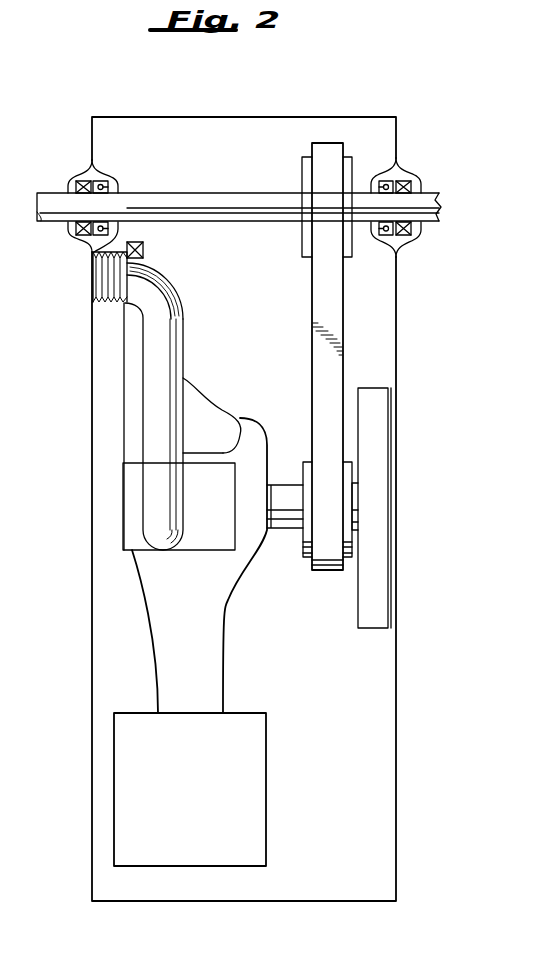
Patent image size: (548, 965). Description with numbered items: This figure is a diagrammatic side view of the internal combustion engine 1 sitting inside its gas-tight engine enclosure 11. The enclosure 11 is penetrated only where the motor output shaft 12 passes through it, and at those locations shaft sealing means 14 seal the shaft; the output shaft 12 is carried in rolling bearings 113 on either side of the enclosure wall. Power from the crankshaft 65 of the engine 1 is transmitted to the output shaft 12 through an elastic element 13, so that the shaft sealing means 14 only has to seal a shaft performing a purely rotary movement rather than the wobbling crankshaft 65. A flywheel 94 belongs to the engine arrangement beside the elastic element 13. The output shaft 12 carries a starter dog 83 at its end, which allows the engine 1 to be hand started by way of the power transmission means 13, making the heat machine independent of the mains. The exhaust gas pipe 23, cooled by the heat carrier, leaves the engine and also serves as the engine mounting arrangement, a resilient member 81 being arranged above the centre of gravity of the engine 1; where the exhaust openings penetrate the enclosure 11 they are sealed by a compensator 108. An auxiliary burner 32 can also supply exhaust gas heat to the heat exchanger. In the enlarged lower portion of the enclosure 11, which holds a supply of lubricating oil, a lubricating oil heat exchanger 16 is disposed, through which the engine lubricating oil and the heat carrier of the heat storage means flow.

The internal combustion engine 1 is at (253, 440).
The engine enclosure 11 is at (397, 660).
The output shaft 12 is at (243, 200).
The elastic element 13 is at (333, 433).
The shaft sealing means 14 is at (64, 235).
The lubricating oil heat exchanger 16 is at (258, 765).
The exhaust gas pipe 23 is at (170, 328).
The auxiliary burner 32 is at (207, 428).
The crankshaft 65 is at (293, 520).
The resilient member 81 is at (144, 248).
The starter dog 83 is at (440, 200).
The flywheel 94 is at (380, 583).
The compensator 108 is at (157, 273).
The rolling bearings 113 is at (90, 236).